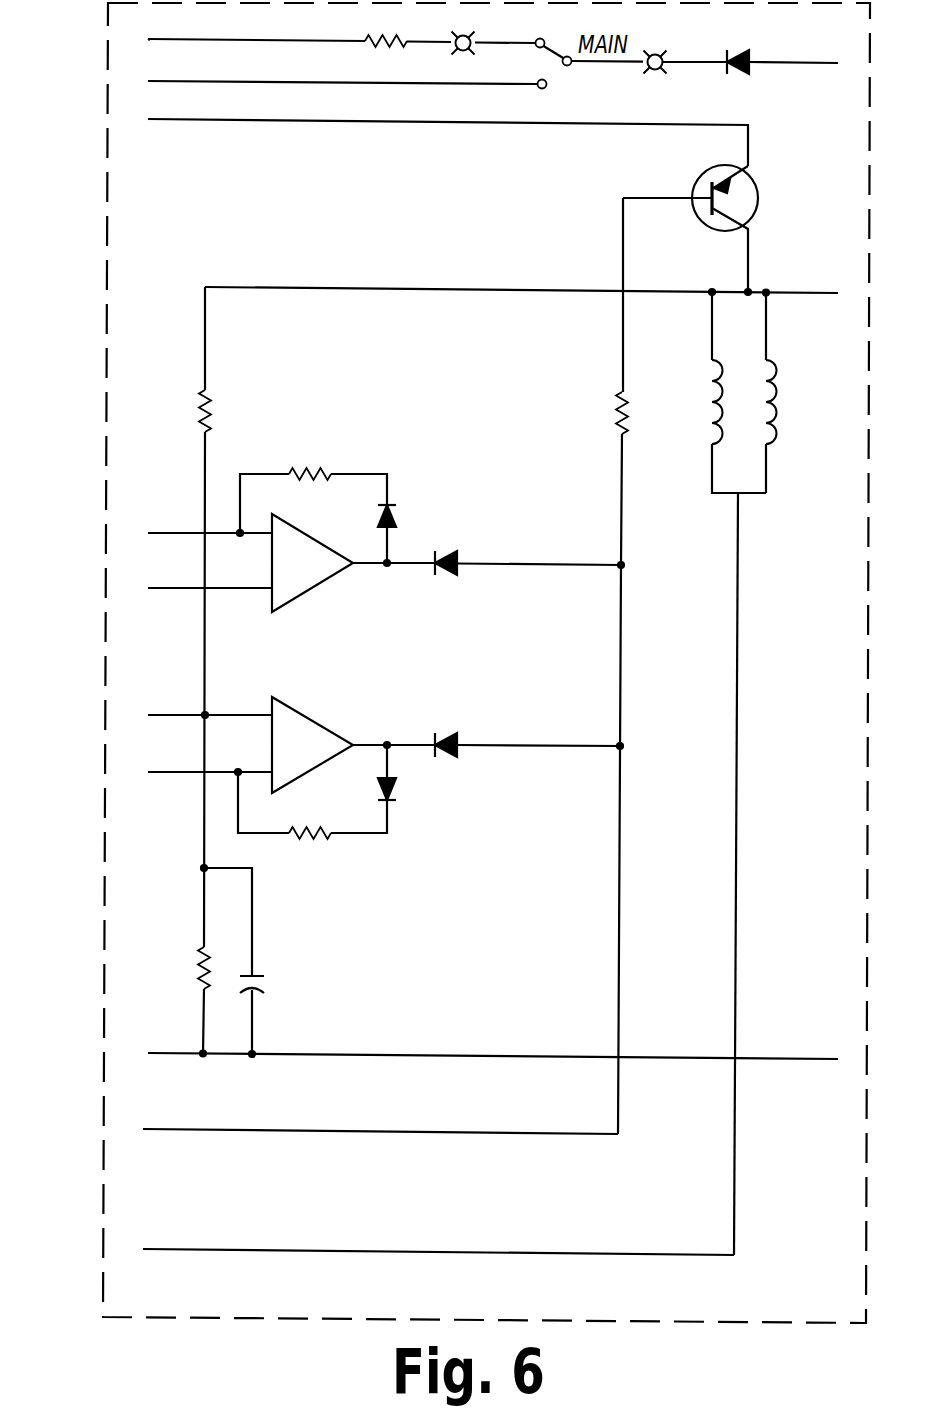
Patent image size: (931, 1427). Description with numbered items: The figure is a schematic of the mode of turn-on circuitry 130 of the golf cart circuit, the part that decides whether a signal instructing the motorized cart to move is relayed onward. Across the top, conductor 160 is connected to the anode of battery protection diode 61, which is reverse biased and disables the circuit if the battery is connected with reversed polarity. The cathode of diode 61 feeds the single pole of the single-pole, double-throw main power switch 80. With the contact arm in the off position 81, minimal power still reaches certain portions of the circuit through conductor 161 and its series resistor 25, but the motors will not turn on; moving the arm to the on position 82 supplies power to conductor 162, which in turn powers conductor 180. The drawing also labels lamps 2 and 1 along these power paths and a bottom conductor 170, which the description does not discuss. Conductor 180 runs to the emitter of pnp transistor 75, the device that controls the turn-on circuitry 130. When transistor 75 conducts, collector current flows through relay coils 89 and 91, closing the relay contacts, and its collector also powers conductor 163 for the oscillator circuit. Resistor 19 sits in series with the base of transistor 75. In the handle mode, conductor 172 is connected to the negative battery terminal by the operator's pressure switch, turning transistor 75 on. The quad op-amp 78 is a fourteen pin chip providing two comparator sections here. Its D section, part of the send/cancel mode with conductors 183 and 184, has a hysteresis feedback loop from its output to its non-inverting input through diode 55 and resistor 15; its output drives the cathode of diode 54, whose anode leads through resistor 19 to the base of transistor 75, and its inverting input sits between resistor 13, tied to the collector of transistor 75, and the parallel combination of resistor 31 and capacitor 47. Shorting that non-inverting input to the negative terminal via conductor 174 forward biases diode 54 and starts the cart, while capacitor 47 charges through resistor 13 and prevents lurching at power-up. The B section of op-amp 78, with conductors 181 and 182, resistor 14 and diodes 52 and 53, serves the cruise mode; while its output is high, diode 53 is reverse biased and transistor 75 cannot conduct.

The turn-on circuitry 130 is at (88, 185).
The conductor 161 is at (184, 38).
The conductor 162 is at (188, 82).
The conductor 180 is at (172, 121).
The resistor 25 is at (378, 53).
The indicator lamp 2 is at (463, 28).
The off position 81 is at (542, 38).
The main power switch 80 is at (567, 66).
The on position 82 is at (538, 88).
The main lamp 1 is at (686, 44).
The battery protection diode 61 is at (738, 76).
The conductor 160 is at (799, 64).
The pnp transistor 75 is at (712, 228).
The conductor 163 is at (798, 295).
The resistor 13 is at (210, 397).
The resistor 19 is at (612, 432).
The relay coil 89 is at (716, 421).
The relay coil 91 is at (779, 412).
The quad op-amp 78 is at (315, 591).
The conductor 181 is at (153, 531).
The conductor 182 is at (155, 592).
The resistor 14 is at (312, 466).
The diode 52 is at (393, 507).
The diode 53 is at (440, 569).
The conductor 183 is at (160, 713).
The conductor 184 is at (155, 776).
The resistor 15 is at (320, 838).
The diode 55 is at (378, 791).
The diode 54 is at (440, 752).
The resistor 31 is at (198, 976).
The capacitor 47 is at (253, 997).
The ground conductor 170 is at (150, 1056).
The conductor 172 is at (150, 1132).
The conductor 174 is at (152, 1252).